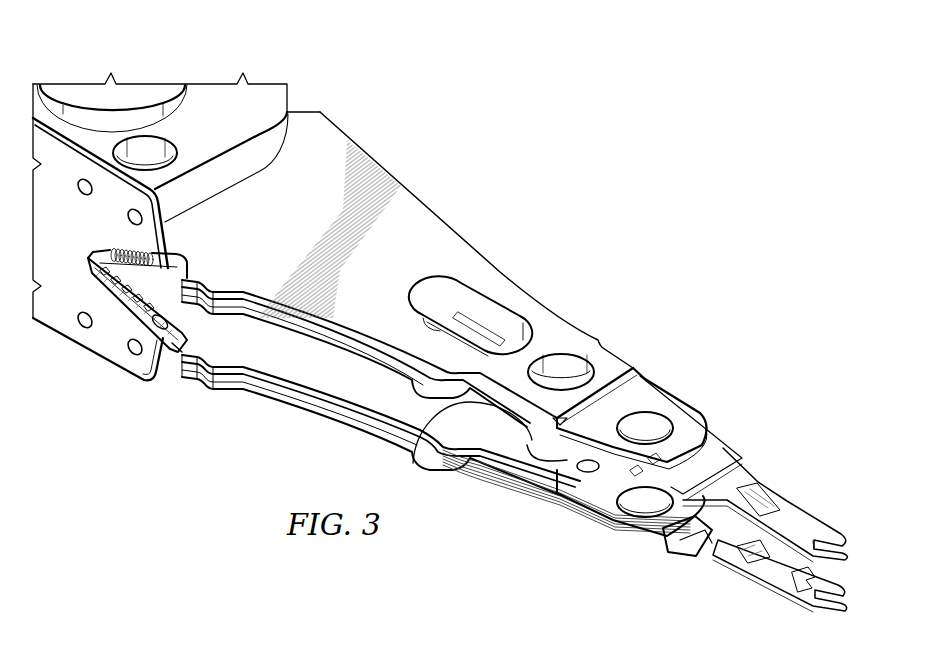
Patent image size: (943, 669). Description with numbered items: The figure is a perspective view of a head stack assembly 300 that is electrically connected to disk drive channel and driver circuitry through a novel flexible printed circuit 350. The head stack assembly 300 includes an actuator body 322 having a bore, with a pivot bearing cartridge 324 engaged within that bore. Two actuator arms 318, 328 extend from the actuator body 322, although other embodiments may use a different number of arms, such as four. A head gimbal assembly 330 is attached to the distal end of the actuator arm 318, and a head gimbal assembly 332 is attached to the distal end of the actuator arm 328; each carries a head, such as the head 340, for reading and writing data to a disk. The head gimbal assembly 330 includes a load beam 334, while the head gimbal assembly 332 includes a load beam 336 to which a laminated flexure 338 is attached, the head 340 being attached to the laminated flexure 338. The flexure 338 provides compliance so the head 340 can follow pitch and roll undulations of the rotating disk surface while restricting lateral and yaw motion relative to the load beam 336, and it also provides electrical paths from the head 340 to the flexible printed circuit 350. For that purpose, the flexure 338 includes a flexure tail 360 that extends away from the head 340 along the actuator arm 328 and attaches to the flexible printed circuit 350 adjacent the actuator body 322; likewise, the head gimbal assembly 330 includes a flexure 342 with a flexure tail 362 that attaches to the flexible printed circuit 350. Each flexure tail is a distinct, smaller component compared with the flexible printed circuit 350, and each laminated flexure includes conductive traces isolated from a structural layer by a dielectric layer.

The head stack assembly 300 is at (550, 192).
The actuator arm 318 is at (441, 228).
The actuator body 322 is at (240, 125).
The pivot bearing cartridge 324 is at (88, 90).
The actuator arm 328 is at (320, 376).
The head gimbal assembly 330 is at (717, 449).
The head gimbal assembly 332 is at (682, 542).
The load beam 334 is at (745, 475).
The load beam 336 is at (705, 552).
The laminated flexure 338 is at (773, 564).
The head 340 is at (790, 572).
The flexure 342 is at (821, 526).
The flexible printed circuit 350 is at (102, 348).
The flexure tail 360 is at (497, 481).
The flexure tail 362 is at (413, 463).